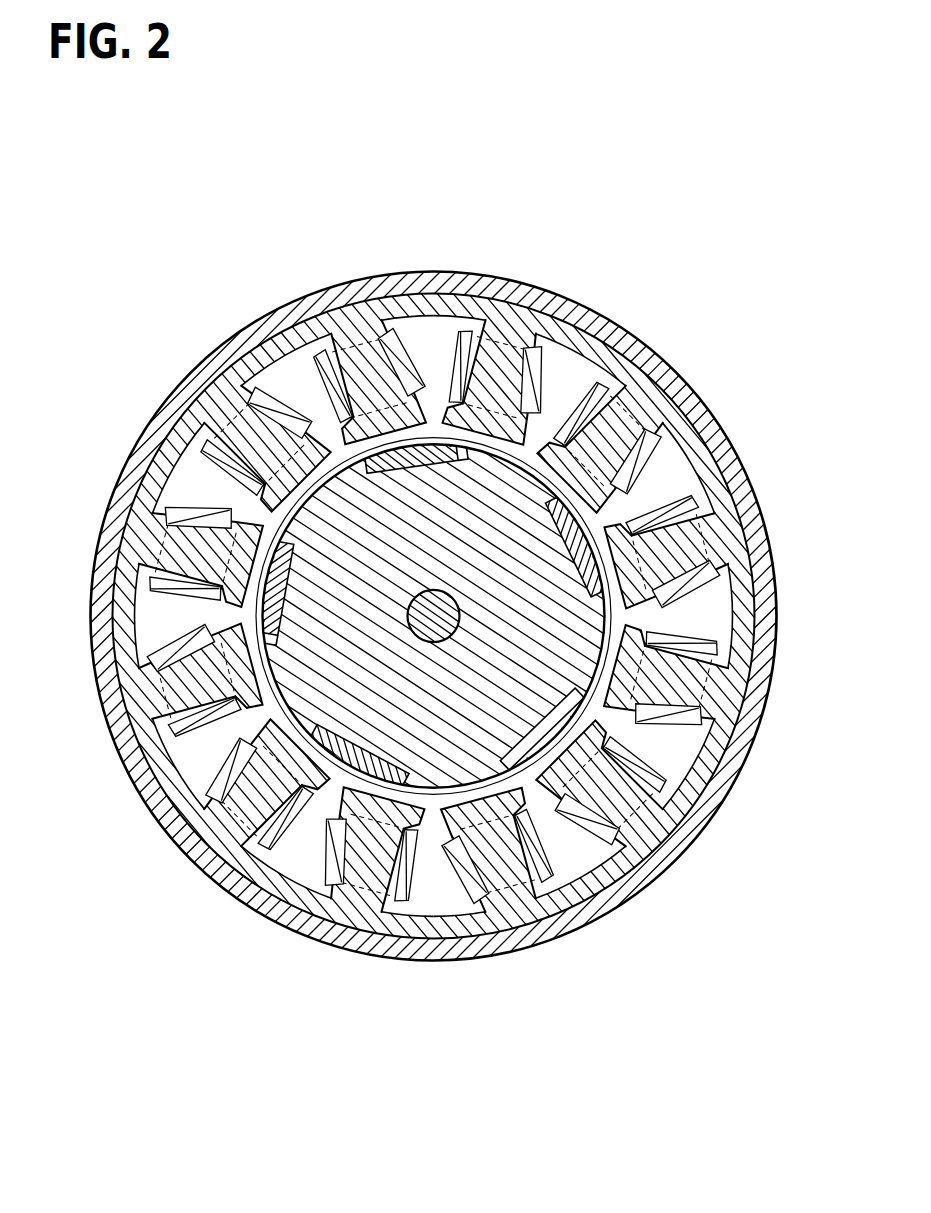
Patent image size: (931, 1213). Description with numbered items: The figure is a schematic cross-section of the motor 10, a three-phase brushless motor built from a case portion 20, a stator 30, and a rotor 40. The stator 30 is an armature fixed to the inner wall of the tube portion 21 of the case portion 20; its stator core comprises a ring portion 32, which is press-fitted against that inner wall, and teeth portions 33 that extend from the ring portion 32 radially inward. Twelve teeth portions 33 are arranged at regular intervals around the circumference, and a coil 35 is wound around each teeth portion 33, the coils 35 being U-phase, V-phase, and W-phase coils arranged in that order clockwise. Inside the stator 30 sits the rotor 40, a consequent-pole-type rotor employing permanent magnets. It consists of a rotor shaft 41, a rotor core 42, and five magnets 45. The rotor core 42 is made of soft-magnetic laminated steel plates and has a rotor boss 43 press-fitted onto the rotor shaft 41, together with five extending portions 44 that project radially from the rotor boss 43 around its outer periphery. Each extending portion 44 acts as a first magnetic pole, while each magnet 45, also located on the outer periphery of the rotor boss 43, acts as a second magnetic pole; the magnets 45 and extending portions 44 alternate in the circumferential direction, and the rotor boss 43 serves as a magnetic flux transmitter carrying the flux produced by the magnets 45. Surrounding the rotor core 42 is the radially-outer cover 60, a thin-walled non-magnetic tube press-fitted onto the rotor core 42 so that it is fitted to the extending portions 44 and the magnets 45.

The motor 10 is at (434, 577).
The case portion 20 is at (434, 577).
The tube portion 21 is at (555, 284).
The stator 30 is at (418, 318).
The ring portion 32 is at (390, 305).
The teeth portions 33 is at (368, 356).
The coil 35 is at (459, 367).
The rotor 40 is at (270, 535).
The rotor shaft 41 is at (440, 628).
The rotor core 42 is at (421, 622).
The rotor boss 43 is at (305, 778).
The extending portion 44 is at (558, 385).
The magnet 45 is at (437, 440).
The radially-outer cover 60 is at (272, 550).